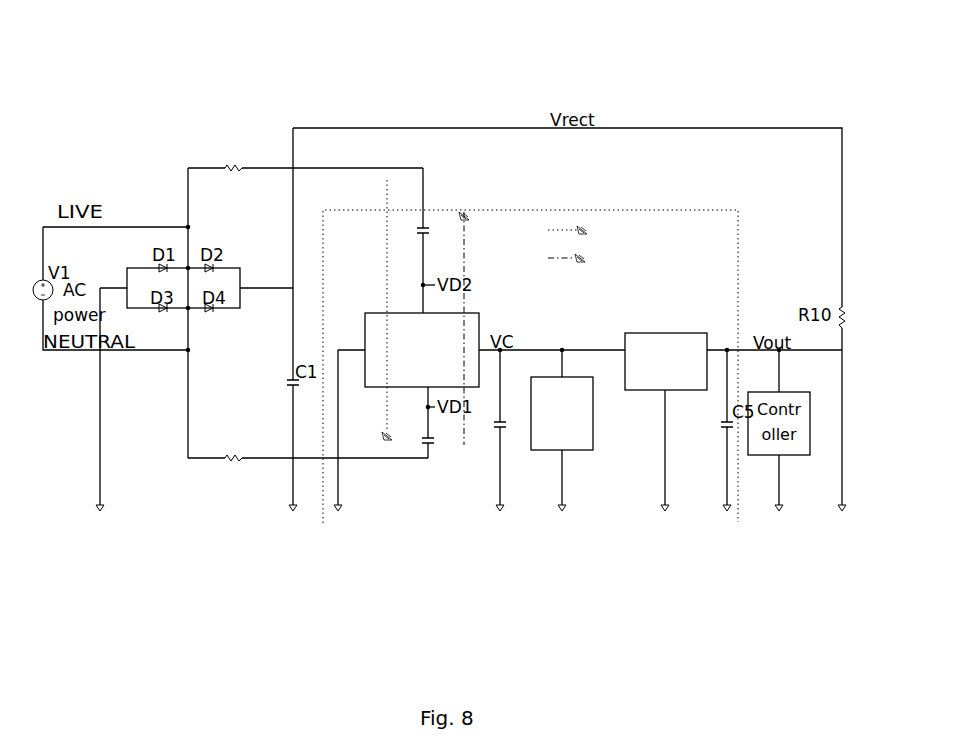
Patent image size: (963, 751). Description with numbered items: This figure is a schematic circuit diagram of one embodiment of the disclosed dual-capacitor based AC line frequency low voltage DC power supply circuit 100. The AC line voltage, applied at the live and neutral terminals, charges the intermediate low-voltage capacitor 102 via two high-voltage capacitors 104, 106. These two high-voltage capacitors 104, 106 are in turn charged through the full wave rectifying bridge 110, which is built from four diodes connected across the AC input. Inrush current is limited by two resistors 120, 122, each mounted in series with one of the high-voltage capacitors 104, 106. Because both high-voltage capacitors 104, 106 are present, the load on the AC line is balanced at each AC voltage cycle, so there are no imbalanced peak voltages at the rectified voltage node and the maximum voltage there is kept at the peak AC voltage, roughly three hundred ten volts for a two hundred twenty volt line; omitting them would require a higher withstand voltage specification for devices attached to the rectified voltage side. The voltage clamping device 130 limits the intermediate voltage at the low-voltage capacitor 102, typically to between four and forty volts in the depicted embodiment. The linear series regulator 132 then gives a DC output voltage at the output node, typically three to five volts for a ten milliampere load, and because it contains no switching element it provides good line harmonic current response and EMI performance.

The dual-capacitor based AC line frequency low voltage DC power supply circuit 100 is at (478, 105).
The intermediate low-voltage capacitor 102 is at (498, 425).
The high-voltage capacitor 104 is at (425, 217).
The high-voltage capacitor 106 is at (425, 443).
The full wave rectifying bridge 110 is at (372, 377).
The resistor 120 is at (242, 140).
The resistor 122 is at (228, 487).
The voltage clamping device 130 is at (585, 443).
The linear series regulator 132 is at (677, 382).